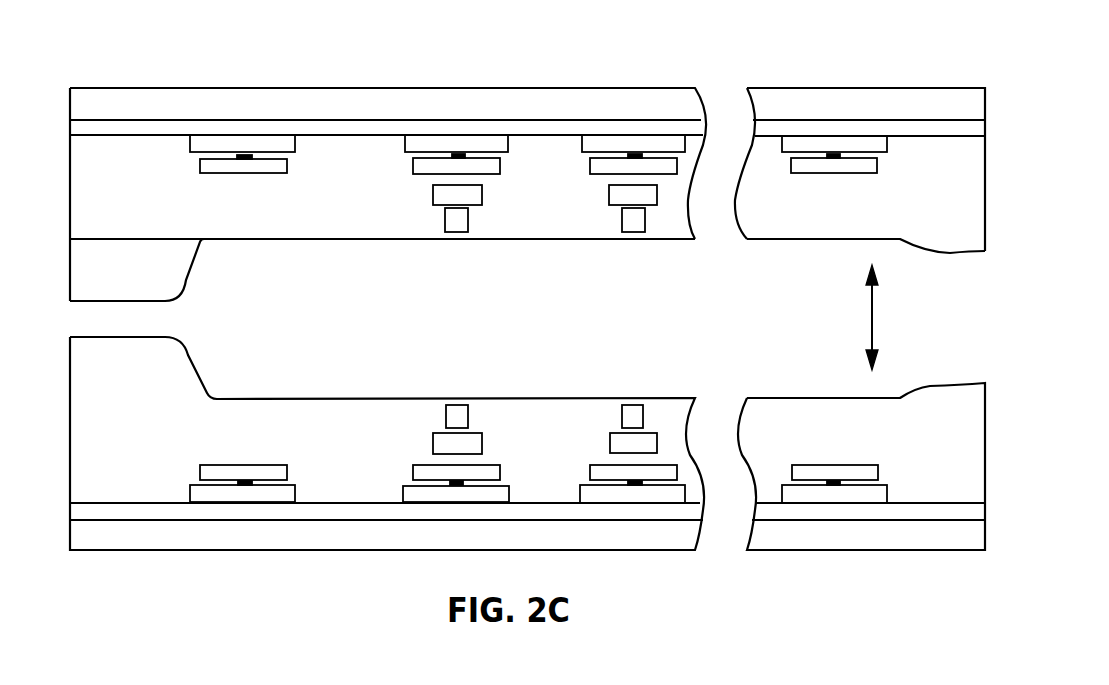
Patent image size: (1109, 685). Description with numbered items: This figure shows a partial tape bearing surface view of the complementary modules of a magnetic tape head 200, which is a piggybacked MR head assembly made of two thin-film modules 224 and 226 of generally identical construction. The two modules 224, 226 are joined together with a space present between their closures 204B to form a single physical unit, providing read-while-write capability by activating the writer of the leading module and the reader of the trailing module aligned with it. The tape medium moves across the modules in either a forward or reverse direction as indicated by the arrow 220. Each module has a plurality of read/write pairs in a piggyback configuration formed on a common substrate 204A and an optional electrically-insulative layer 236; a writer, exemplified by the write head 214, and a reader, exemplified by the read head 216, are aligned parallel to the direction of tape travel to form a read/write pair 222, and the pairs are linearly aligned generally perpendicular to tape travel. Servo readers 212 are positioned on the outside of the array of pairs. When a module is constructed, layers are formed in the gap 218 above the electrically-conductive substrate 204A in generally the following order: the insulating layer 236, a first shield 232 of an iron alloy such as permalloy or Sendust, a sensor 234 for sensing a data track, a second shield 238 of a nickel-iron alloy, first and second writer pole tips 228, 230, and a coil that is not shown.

The magnetic tape head 200 is at (527, 165).
The substrate 204A is at (222, 116).
The closure 204B is at (186, 280).
The servo readers 212 is at (296, 443).
The write head 214 is at (449, 404).
The read head 216 is at (438, 464).
The gap 218 is at (295, 239).
The arrow 220 is at (872, 322).
The read/write pair 222 is at (438, 410).
The thin-film module 224 is at (897, 88).
The thin-film module 226 is at (880, 550).
The first writer pole tip 228 is at (433, 443).
The second writer pole tip 230 is at (445, 413).
The first shield 232 is at (403, 494).
The sensor 234 is at (398, 478).
The electrically-insulative layer 236 is at (915, 505).
The second shield 238 is at (413, 470).